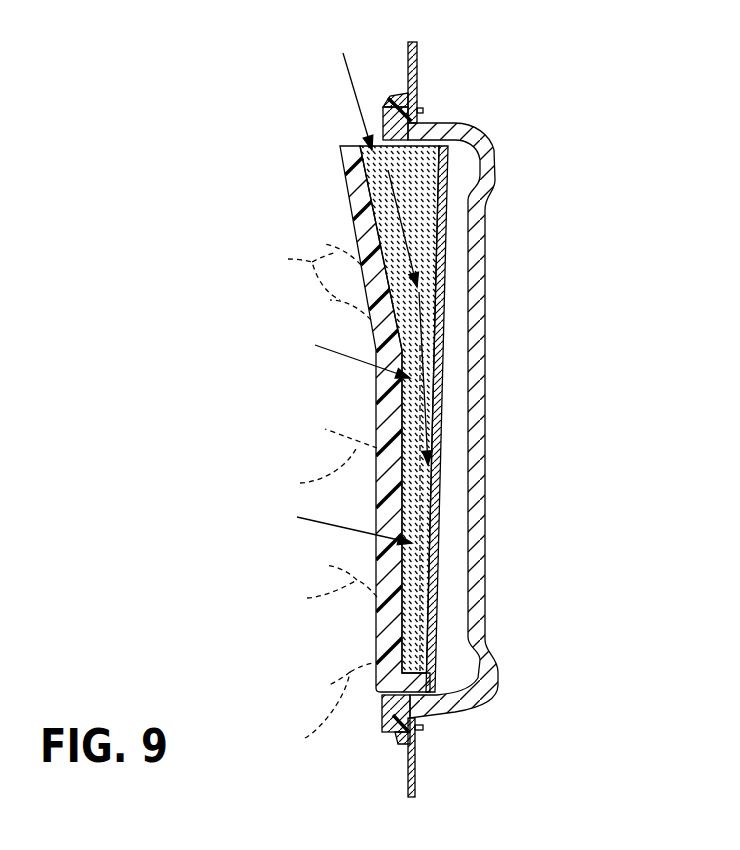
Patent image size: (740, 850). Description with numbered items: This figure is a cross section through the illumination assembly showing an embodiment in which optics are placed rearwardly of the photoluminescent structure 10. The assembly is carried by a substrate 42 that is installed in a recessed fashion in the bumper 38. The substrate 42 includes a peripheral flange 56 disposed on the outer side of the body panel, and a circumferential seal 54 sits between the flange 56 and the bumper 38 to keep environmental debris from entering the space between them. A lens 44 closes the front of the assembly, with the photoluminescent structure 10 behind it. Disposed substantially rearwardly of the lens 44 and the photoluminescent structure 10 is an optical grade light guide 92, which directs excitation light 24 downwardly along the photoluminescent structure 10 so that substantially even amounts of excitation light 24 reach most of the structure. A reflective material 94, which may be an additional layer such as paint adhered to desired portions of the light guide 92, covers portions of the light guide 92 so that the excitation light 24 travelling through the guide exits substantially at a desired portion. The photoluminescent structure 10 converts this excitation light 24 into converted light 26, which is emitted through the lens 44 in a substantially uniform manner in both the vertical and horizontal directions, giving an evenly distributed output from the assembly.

The photoluminescent structure 10 is at (414, 600).
The excitation light 24 is at (357, 102).
The converted light 26 is at (317, 497).
The bumper 38 is at (417, 764).
The substrate 42 is at (468, 137).
The lens 44 is at (400, 626).
The seal 54 is at (400, 742).
The peripheral flange 56 is at (390, 100).
The light guide 92 is at (427, 178).
The reflective material 94 is at (440, 248).